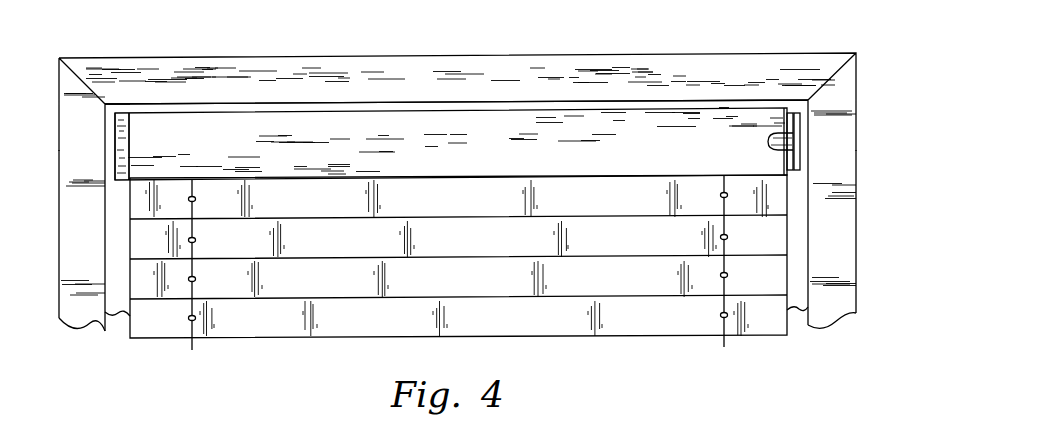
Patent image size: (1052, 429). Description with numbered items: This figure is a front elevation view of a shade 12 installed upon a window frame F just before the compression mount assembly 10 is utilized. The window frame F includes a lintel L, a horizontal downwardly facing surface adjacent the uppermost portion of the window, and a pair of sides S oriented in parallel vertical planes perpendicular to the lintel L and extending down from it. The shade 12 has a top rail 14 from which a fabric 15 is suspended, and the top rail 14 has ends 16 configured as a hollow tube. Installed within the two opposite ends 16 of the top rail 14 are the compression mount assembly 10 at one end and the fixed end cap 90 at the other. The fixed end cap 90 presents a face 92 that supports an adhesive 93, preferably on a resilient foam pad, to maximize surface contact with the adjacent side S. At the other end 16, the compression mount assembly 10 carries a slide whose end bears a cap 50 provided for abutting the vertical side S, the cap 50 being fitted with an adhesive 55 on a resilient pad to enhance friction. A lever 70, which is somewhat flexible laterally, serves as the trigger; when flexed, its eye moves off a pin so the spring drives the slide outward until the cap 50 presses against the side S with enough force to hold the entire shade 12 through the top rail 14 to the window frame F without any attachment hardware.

The compression mount assembly 10 is at (795, 80).
The shade 12 is at (212, 360).
The top rail 14 is at (494, 157).
The fabric 15 is at (614, 250).
The ends 16 is at (180, 135).
The cap 50 is at (805, 122).
The adhesive 55 is at (803, 152).
The lever 70 is at (770, 142).
The fixed end cap 90 is at (131, 88).
The face 92 is at (123, 153).
The adhesive 93 is at (115, 130).
The window frame F is at (835, 53).
The lintel L is at (346, 103).
The sides S is at (103, 232).